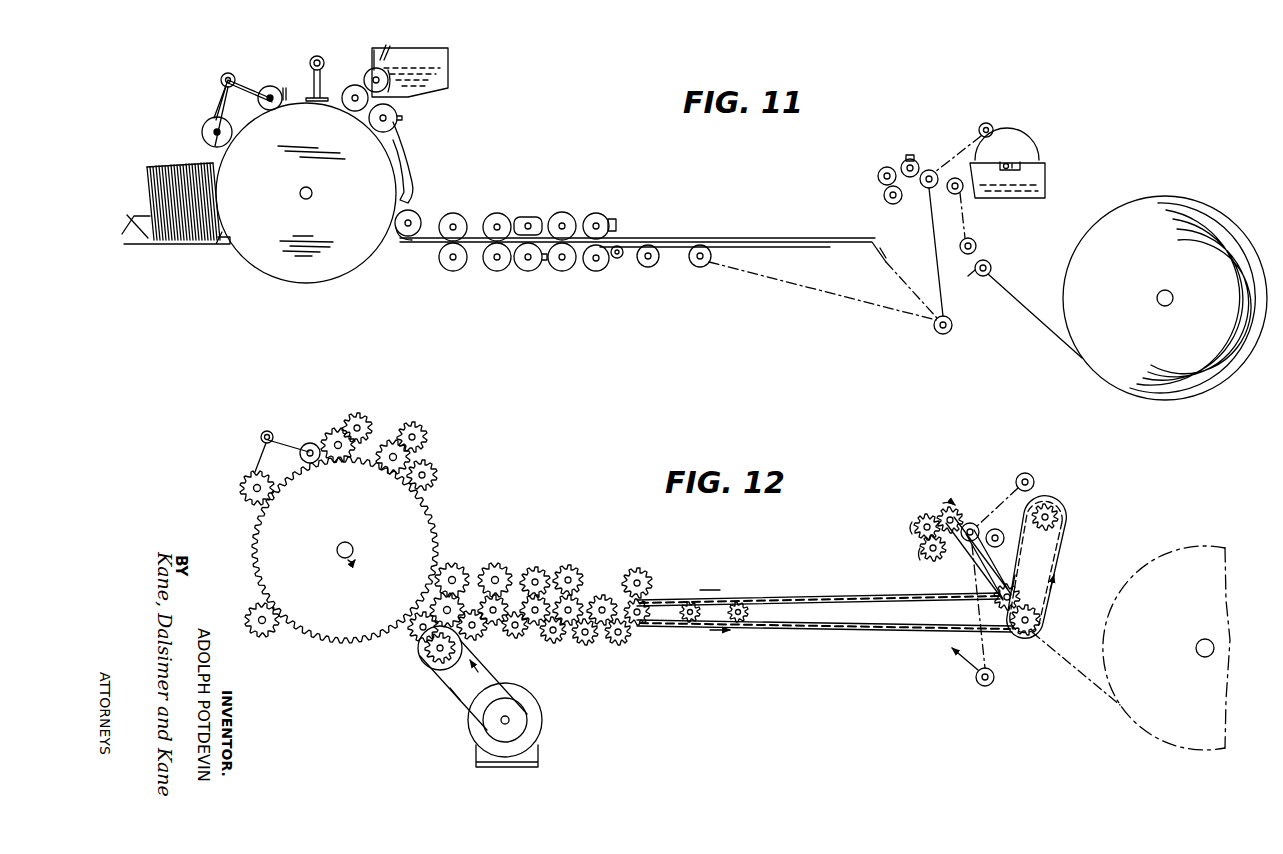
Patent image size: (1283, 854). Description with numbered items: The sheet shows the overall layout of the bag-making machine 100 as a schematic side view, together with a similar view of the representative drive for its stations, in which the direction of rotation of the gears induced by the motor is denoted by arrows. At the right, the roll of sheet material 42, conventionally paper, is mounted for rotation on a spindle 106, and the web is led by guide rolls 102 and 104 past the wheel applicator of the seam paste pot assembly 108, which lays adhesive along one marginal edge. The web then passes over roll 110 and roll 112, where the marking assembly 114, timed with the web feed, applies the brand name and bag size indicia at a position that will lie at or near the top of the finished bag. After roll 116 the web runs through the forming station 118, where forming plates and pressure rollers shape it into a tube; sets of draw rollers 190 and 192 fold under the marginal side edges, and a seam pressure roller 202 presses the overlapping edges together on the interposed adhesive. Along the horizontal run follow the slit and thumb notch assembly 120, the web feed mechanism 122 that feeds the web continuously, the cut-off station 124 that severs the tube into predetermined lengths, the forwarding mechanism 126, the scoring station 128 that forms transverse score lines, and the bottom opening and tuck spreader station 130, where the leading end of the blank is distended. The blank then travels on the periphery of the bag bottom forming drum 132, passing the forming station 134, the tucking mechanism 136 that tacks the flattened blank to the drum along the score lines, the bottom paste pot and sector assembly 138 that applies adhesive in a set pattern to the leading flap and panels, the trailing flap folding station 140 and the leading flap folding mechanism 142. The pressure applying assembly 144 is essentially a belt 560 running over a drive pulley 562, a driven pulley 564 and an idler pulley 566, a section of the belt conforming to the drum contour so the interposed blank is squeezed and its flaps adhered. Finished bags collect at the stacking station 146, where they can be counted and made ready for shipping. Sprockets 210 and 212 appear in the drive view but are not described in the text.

In FIG. 11, the roll of sheet material 42 is at (1160, 197).
In FIG. 12, the roll of sheet material 42 is at (1155, 562).
In FIG. 11, the bag-making machine 100 is at (610, 150).
In FIG. 11, the guide roll 102 is at (992, 267).
In FIG. 12, the guide roll 102 is at (1022, 636).
In FIG. 11, the guide roll 104 is at (960, 196).
In FIG. 12, the guide roll 104 is at (995, 528).
In FIG. 11, the spindle 106 is at (1158, 292).
In FIG. 12, the spindle 106 is at (1200, 641).
In FIG. 11, the seam paste pot assembly 108 is at (1046, 160).
In FIG. 12, the seam paste pot assembly 108 is at (1055, 500).
In FIG. 11, the roll 110 is at (981, 125).
In FIG. 12, the roll 110 is at (1017, 492).
In FIG. 11, the roll 112 is at (929, 170).
In FIG. 12, the roll 112 is at (971, 522).
In FIG. 11, the marking assembly 114 is at (880, 163).
In FIG. 12, the marking assembly 114 is at (918, 508).
In FIG. 11, the roll 116 is at (939, 334).
In FIG. 12, the roll 116 is at (992, 683).
In FIG. 11, the forming station 118 is at (777, 236).
In FIG. 11, the slit and thumb notch assembly 120 is at (600, 212).
In FIG. 12, the slit and thumb notch assembly 120 is at (636, 566).
In FIG. 11, the web feed mechanism 122 is at (561, 211).
In FIG. 12, the web feed mechanism 122 is at (603, 592).
In FIG. 11, the cut-off station 124 is at (528, 213).
In FIG. 12, the cut-off station 124 is at (572, 565).
In FIG. 11, the forwarding mechanism 126 is at (494, 212).
In FIG. 12, the forwarding mechanism 126 is at (553, 553).
In FIG. 11, the scoring station 128 is at (478, 200).
In FIG. 12, the scoring station 128 is at (500, 564).
In FIG. 11, the bottom opening and tuck spreader station 130 is at (420, 210).
In FIG. 12, the bottom opening and tuck spreader station 130 is at (456, 566).
In FIG. 11, the bag bottom forming drum 132 is at (282, 283).
In FIG. 12, the bag bottom forming drum 132 is at (350, 655).
In FIG. 11, the forming station 134 is at (412, 168).
In FIG. 11, the tucking mechanism 136 is at (408, 112).
In FIG. 12, the tucking mechanism 136 is at (440, 482).
In FIG. 11, the bottom paste pot and sector assembly 138 is at (443, 51).
In FIG. 11, the trailing flap folding station 140 is at (328, 60).
In FIG. 11, the leading flap folding mechanism 142 is at (283, 76).
In FIG. 11, the pressure applying assembly 144 is at (180, 82).
In FIG. 12, the pressure applying assembly 144 is at (243, 460).
In FIG. 11, the stacking station 146 is at (140, 167).
In FIG. 12, the stacking station 146 is at (262, 640).
In FIG. 11, the draw rollers 190 is at (708, 264).
In FIG. 12, the draw rollers 190 is at (745, 623).
In FIG. 11, the draw rollers 192 is at (657, 265).
In FIG. 12, the draw rollers 192 is at (690, 623).
In FIG. 11, the seam pressure roller 202 is at (619, 258).
In FIG. 11, the sprocket / chain drive 210 is at (614, 225).
In FIG. 12, the sprocket / chain drive 210 is at (645, 600).
In FIG. 11, the roller 212 is at (595, 266).
In FIG. 12, the roller 212 is at (632, 640).
In FIG. 11, the belt 560 is at (212, 104).
In FIG. 12, the belt 560 is at (246, 463).
In FIG. 11, the drive pulley 562 is at (207, 135).
In FIG. 12, the drive pulley 562 is at (242, 493).
In FIG. 11, the driven pulley 564 is at (268, 87).
In FIG. 12, the driven pulley 564 is at (322, 432).
In FIG. 11, the idler pulley 566 is at (223, 77).
In FIG. 12, the idler pulley 566 is at (270, 430).